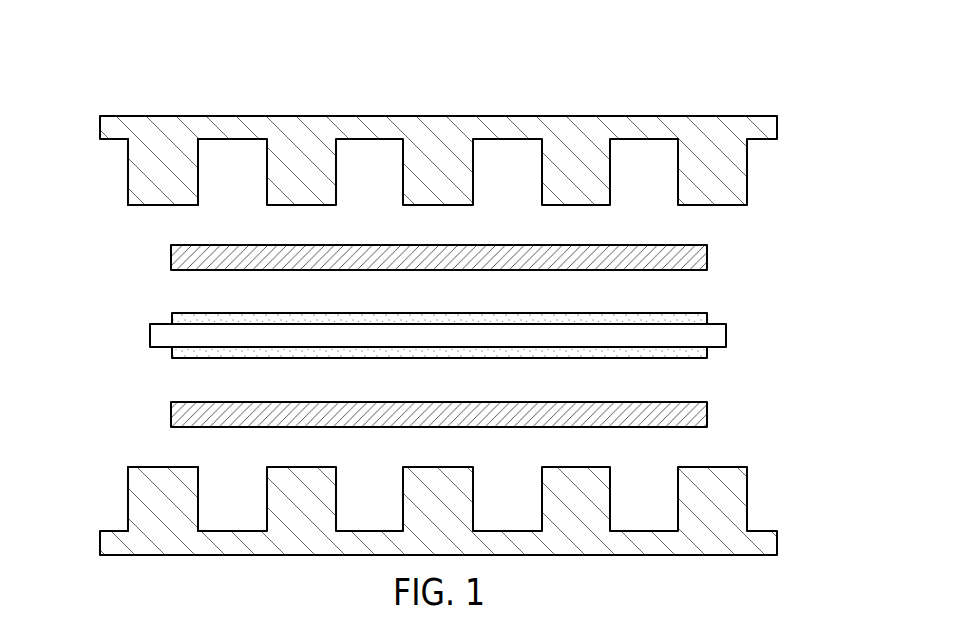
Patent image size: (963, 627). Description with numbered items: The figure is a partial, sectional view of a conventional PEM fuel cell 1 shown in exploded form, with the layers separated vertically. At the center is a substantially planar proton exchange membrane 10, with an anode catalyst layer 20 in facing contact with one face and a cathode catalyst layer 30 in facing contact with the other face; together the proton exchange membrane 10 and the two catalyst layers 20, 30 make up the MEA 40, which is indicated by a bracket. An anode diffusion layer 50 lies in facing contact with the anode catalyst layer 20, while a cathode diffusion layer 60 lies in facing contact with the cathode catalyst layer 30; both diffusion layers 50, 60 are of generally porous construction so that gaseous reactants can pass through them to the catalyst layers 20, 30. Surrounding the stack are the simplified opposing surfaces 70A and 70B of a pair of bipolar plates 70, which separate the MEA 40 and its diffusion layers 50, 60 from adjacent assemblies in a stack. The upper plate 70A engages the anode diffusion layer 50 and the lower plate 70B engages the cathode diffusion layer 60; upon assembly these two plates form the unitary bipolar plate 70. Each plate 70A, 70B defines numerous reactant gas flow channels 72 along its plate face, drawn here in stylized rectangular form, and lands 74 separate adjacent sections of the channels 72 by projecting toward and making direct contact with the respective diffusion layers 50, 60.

The fuel cell 1 is at (444, 291).
The proton exchange membrane 10 is at (150, 337).
The anode catalyst layer 20 is at (172, 317).
The cathode catalyst layer 30 is at (172, 351).
The MEA 40 is at (740, 312).
The anode diffusion layer 50 is at (171, 257).
The cathode diffusion layer 60 is at (171, 411).
The bipolar plate 70 is at (444, 132).
The plate 70A is at (101, 120).
The plate 70B is at (101, 545).
The reactant gas flow channels 72 is at (218, 184).
The lands 74 is at (128, 162).